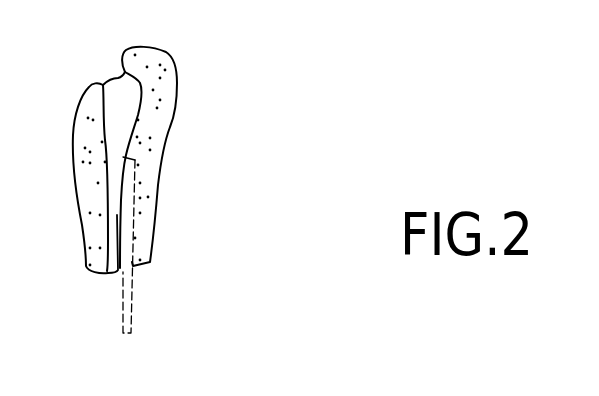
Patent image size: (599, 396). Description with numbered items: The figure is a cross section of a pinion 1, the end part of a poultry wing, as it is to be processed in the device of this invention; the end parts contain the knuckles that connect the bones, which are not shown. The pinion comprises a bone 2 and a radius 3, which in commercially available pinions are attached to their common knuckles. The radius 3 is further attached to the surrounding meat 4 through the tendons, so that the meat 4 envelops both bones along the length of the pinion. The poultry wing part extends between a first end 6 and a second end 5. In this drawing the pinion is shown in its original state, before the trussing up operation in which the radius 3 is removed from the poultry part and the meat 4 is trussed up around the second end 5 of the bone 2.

The cosmetic applicator assembly 1 is at (223, 130).
The bone 2 is at (117, 220).
The radius 3 is at (122, 313).
The meat 4 is at (166, 74).
The second end 5 is at (117, 91).
The first end 6 is at (117, 273).